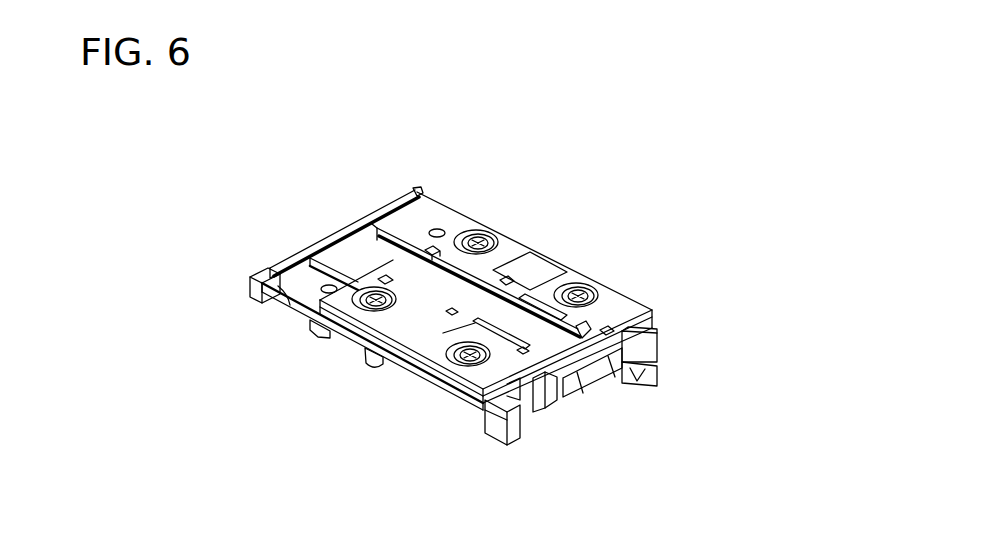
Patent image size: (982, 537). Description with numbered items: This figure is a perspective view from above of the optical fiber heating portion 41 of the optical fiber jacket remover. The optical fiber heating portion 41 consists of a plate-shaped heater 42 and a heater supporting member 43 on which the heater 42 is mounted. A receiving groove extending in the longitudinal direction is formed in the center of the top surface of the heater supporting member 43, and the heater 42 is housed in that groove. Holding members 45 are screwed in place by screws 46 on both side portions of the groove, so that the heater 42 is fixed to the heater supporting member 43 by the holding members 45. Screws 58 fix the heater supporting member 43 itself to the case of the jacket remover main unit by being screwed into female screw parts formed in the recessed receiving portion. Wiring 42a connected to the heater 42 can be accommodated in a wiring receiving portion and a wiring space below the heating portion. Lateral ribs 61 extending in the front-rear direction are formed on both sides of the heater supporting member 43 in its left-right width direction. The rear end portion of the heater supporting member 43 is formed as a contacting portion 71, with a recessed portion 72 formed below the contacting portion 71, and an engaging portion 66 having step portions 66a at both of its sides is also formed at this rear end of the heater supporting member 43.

The optical fiber heating portion 41 is at (558, 172).
The heater 42 is at (397, 261).
The wiring 42a is at (588, 378).
The heater supporting member 43 is at (296, 320).
The holding members 45 is at (550, 270).
The screws 46 is at (583, 293).
The screws 58 is at (378, 297).
The lateral ribs 61 is at (280, 308).
The engaging portion 66 is at (573, 405).
The step portions 66a is at (545, 410).
The contacting portion 71 is at (645, 338).
The recessed portion 72 is at (638, 370).